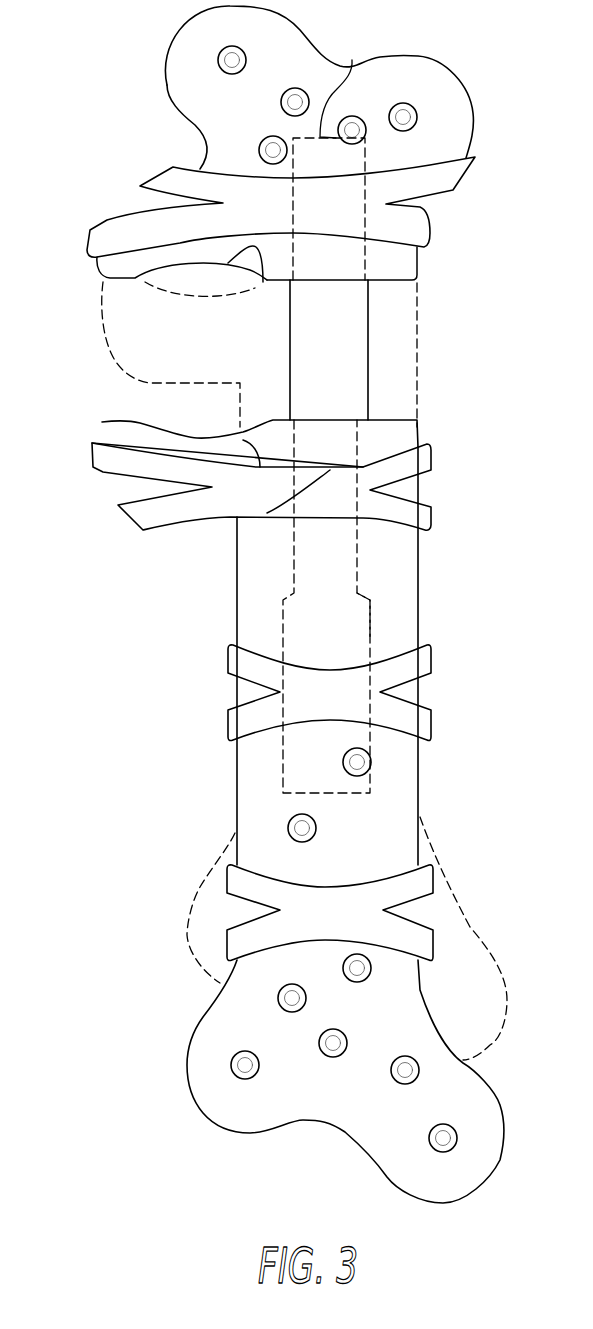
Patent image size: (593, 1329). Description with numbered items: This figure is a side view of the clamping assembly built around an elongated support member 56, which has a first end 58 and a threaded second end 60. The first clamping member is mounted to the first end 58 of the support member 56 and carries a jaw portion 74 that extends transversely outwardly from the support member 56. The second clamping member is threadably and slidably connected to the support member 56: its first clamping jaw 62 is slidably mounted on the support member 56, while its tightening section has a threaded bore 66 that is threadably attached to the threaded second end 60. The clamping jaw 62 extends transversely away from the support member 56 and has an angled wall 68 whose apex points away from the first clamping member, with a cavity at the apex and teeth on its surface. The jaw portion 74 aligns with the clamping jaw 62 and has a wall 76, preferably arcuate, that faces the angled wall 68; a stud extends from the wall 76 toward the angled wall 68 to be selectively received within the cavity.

The elongated support member 56 is at (346, 366).
The first end 58 is at (352, 60).
The threaded second end 60 is at (333, 793).
The first clamping jaw 62 is at (248, 497).
The threaded bore 66 is at (370, 633).
The angled wall 68 is at (210, 488).
The jaw portion 74 is at (283, 222).
The wall 76 is at (263, 282).